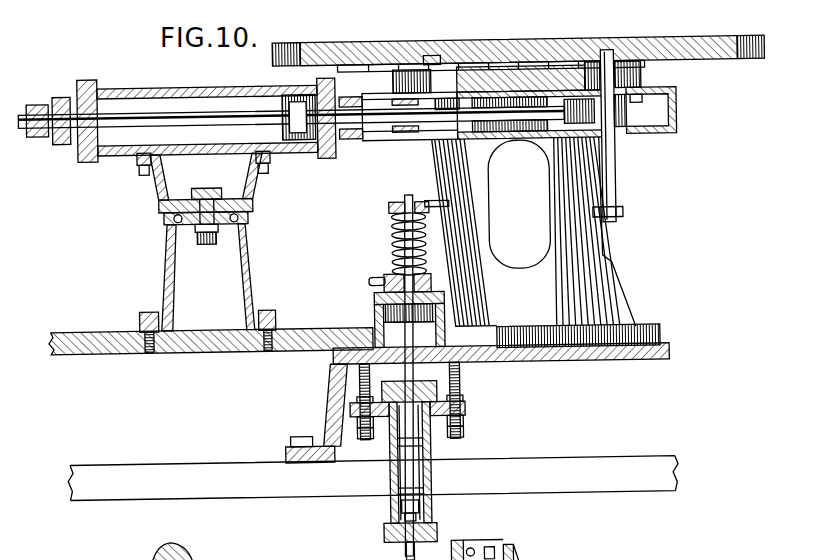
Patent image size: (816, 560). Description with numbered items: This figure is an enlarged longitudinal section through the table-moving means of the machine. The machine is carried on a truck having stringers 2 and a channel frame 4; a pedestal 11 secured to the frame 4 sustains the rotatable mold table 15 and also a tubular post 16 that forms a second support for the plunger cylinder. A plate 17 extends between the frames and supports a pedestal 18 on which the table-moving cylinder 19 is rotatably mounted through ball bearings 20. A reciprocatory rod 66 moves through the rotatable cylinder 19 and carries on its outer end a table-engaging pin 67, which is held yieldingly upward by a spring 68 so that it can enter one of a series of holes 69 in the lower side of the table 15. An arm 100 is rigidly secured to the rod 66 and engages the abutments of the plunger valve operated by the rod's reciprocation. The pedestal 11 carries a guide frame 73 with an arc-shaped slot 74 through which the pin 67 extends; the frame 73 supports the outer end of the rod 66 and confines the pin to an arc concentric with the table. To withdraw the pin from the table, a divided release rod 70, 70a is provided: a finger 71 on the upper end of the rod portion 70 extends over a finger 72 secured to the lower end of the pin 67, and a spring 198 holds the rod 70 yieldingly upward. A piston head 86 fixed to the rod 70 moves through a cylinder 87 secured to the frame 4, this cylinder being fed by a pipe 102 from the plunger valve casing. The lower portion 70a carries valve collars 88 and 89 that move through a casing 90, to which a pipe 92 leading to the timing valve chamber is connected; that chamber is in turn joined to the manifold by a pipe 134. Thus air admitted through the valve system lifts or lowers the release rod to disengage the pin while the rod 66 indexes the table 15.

The stringers 2 is at (648, 487).
The channel frame 4 is at (329, 393).
The pedestal 11 is at (614, 264).
The mold table 15 is at (672, 36).
The tubular post 16 is at (520, 558).
The plate 17 is at (82, 349).
The pedestal 18 is at (251, 257).
The table-moving cylinder 19 is at (147, 76).
The ball bearings 20 is at (173, 216).
The reciprocatory rod 66 is at (248, 108).
The table-engaging pin 67 is at (618, 174).
The spring 68 is at (631, 116).
The holes 69 is at (431, 56).
The release rod 70 is at (405, 243).
The release rod portion 70a is at (461, 382).
The finger 71 is at (438, 201).
The finger 72 is at (625, 216).
The guide frame 73 is at (678, 137).
The arc-shaped slot 74 is at (442, 97).
The piston head 86 is at (391, 312).
The cylinder 87 is at (444, 338).
The valve collar 88 is at (429, 447).
The valve collar 89 is at (395, 492).
The casing 90 is at (428, 477).
The pipe 92 is at (404, 553).
The arm 100 is at (35, 131).
The pipe 102 is at (369, 280).
The pipe 134 is at (491, 556).
The spring 198 is at (392, 228).